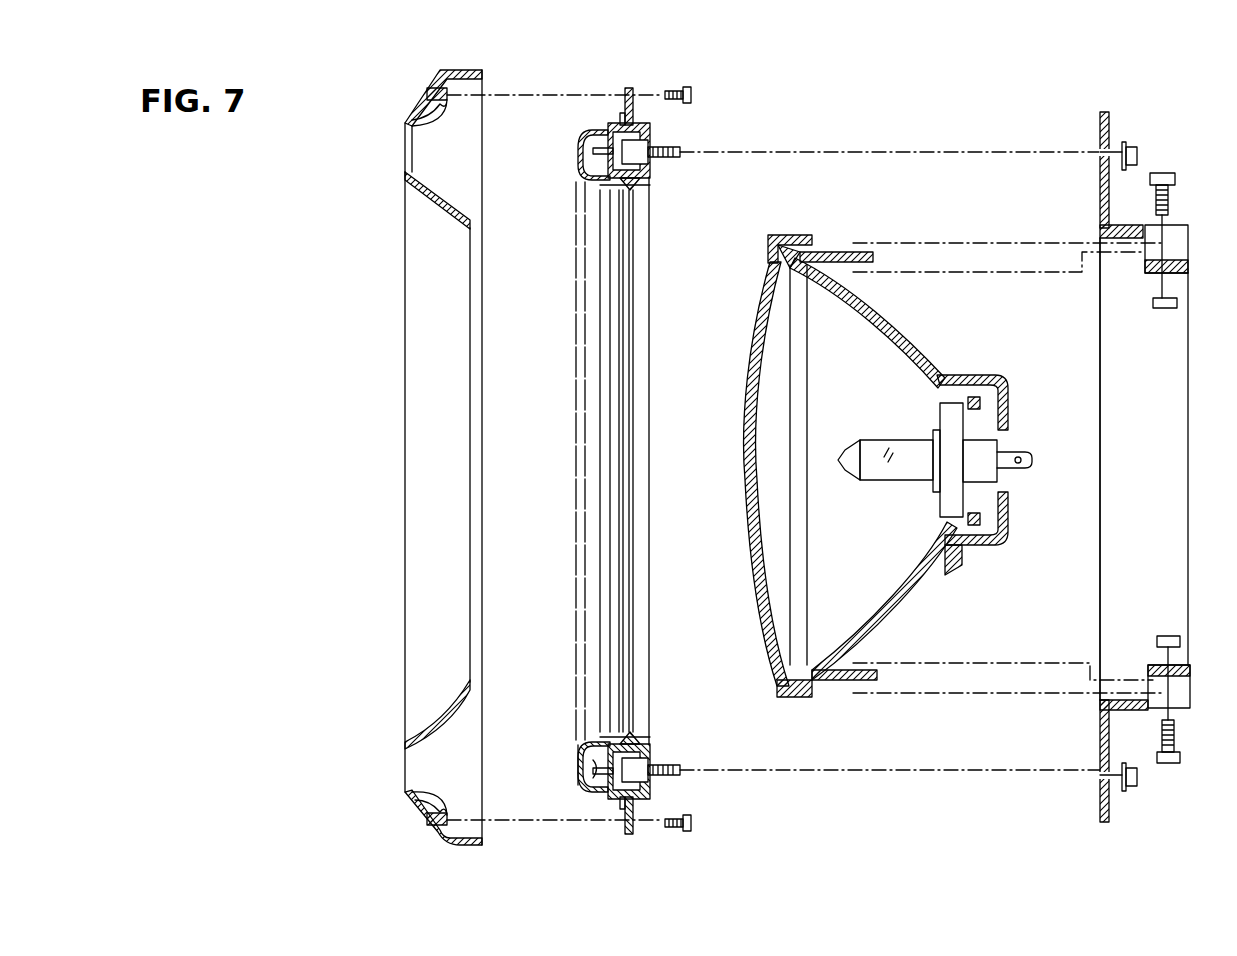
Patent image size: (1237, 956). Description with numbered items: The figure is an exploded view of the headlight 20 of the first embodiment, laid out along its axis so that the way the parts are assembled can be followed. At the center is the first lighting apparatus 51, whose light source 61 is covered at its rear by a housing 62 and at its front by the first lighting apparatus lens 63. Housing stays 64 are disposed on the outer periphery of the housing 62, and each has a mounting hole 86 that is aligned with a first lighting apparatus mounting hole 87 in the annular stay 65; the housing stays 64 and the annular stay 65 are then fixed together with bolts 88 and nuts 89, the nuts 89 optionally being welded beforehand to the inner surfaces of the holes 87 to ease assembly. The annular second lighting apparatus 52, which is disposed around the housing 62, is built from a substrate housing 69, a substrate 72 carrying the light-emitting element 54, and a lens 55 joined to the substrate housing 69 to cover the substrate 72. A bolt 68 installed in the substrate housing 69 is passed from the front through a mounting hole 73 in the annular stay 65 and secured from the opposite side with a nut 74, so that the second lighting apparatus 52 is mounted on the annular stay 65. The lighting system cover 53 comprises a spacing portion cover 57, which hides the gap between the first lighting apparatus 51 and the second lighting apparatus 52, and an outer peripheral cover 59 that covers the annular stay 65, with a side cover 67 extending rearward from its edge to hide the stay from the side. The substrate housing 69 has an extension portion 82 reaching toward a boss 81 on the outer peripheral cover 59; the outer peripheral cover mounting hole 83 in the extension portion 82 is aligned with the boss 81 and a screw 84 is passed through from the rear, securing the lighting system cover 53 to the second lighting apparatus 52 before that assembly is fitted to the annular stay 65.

The headlight 20 is at (886, 125).
The first lighting apparatus 51 is at (752, 607).
The second lighting apparatus 52 is at (652, 368).
The lighting system cover 53 is at (397, 560).
The light-emitting element 54 is at (590, 150).
The lens 55 is at (588, 775).
The spacing portion cover 57 is at (437, 205).
The outer peripheral cover 59 is at (428, 92).
The light source 61 is at (878, 440).
The housing 62 is at (918, 352).
The first lighting apparatus lens 63 is at (742, 472).
The housing stay 64 is at (805, 238).
The annular stay 65 is at (1100, 126).
The side cover 67 is at (485, 68).
The bolt 68 is at (642, 152).
The substrate housing 69 is at (645, 740).
The substrate 72 is at (598, 792).
The mounting hole 73 is at (1100, 156).
The nut 74 is at (1130, 140).
The boss 81 is at (412, 114).
The extension portion 82 is at (640, 118).
The outer peripheral cover mounting hole 83 is at (628, 106).
The screw 84 is at (694, 95).
The mounting hole 86 is at (857, 250).
The first lighting apparatus mounting hole 87 is at (1172, 268).
The bolt 88 is at (1162, 170).
The nut 89 is at (1160, 310).